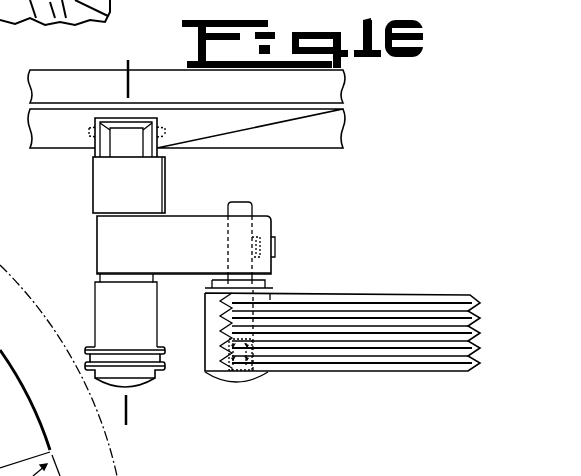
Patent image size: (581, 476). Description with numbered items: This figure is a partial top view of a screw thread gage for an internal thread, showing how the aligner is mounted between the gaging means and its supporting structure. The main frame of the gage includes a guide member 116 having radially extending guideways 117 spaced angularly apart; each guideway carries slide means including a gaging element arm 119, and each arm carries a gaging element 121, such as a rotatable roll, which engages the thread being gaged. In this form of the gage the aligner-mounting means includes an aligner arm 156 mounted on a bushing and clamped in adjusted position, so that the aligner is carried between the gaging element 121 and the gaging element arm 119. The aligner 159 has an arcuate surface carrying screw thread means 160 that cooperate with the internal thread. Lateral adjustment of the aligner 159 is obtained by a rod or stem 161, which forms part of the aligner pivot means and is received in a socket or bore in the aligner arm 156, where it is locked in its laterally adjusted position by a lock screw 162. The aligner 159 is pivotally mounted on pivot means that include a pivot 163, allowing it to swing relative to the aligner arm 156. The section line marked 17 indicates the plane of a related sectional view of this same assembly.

The section line 17- 17 is at (129, 245).
The guide member 116 is at (336, 130).
The guideway 117 is at (94, 142).
The gaging element arm 119 is at (98, 193).
The gaging element 121 is at (157, 376).
The aligner arm 156 is at (185, 223).
The aligner 159 is at (380, 290).
The screw thread means 160 is at (0, 256).
The rod or stem 161 is at (257, 202).
The lock screw 162 is at (277, 247).
The pivot 163 is at (253, 338).